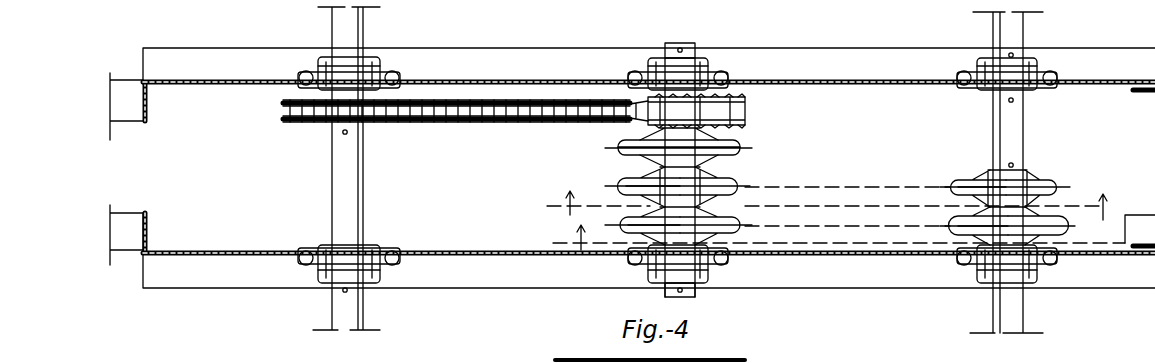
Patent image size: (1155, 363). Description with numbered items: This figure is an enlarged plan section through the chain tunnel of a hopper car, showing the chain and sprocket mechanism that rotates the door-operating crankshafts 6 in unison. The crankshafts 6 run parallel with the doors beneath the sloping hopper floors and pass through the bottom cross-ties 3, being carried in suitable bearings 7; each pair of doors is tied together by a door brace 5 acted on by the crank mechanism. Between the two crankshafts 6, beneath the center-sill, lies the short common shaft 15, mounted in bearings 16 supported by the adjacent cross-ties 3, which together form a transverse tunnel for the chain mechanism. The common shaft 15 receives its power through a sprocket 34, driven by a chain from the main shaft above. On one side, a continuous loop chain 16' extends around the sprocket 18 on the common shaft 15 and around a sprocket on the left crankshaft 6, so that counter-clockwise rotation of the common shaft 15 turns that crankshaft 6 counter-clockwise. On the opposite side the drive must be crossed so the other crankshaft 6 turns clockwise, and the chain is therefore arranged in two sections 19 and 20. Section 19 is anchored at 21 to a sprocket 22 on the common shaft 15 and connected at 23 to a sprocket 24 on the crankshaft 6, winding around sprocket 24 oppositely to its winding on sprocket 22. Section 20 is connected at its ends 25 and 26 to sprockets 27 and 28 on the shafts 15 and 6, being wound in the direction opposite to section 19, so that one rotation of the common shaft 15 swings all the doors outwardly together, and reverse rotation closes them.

The bottom cross-tie 3 is at (868, 84).
The door brace 5 is at (854, 232).
The crankshaft 6 is at (343, 191).
The bearing 7 is at (340, 68).
The common shaft 15 is at (698, 48).
The bearing 16 is at (682, 157).
The chain 16' is at (465, 122).
The sprocket 18 is at (745, 98).
The chain section 19 is at (845, 226).
The chain section 20 is at (860, 187).
The anchor point 21 is at (640, 218).
The sprocket 22 is at (735, 224).
The connection point 23 is at (960, 230).
The sprocket 24 is at (1060, 226).
The chain end 25 is at (655, 180).
The chain end 26 is at (1045, 180).
The sprocket 27 is at (735, 183).
The sprocket 28 is at (985, 180).
The sprocket 34 is at (728, 150).